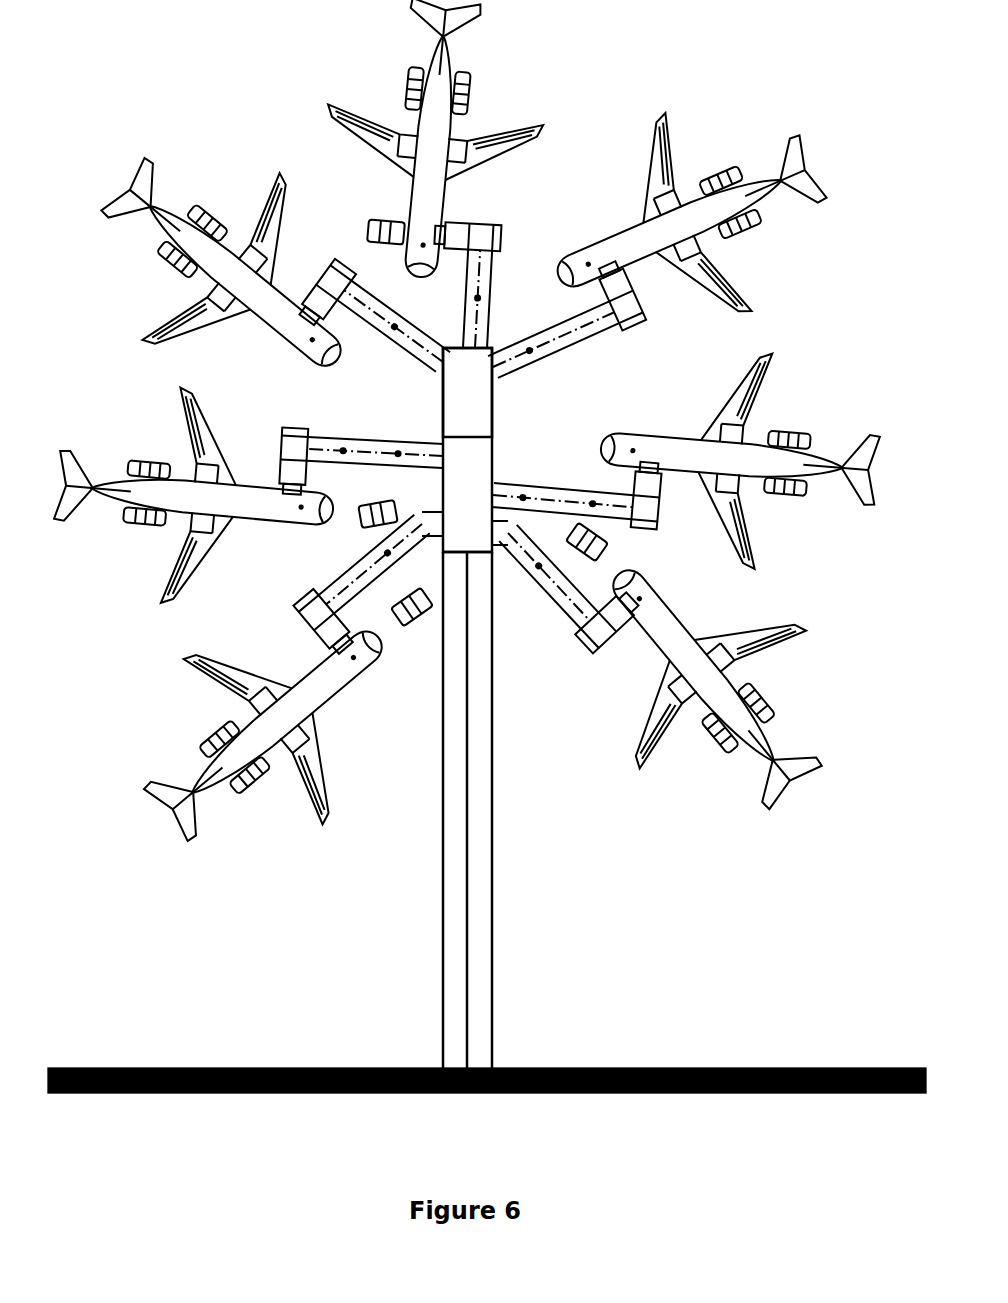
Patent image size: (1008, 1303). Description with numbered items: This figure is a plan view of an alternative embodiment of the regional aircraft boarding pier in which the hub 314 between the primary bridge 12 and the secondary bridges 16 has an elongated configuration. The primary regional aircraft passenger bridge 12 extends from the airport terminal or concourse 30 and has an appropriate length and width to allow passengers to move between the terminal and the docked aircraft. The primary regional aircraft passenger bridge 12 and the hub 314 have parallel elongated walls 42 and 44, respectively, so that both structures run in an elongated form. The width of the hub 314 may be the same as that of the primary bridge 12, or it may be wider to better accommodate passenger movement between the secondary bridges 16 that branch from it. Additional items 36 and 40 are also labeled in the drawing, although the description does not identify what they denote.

The airport terminal satellite module 40 is at (740, 63).
The aircraft 36 is at (257, 295).
The elongated walls 44 is at (434, 392).
The hub 314 is at (490, 437).
The secondary bridges 16 is at (576, 489).
The primary regional aircraft passenger bridge 12 is at (483, 818).
The elongated walls 42 is at (376, 810).
The airport terminal or concourse 30 is at (490, 1152).